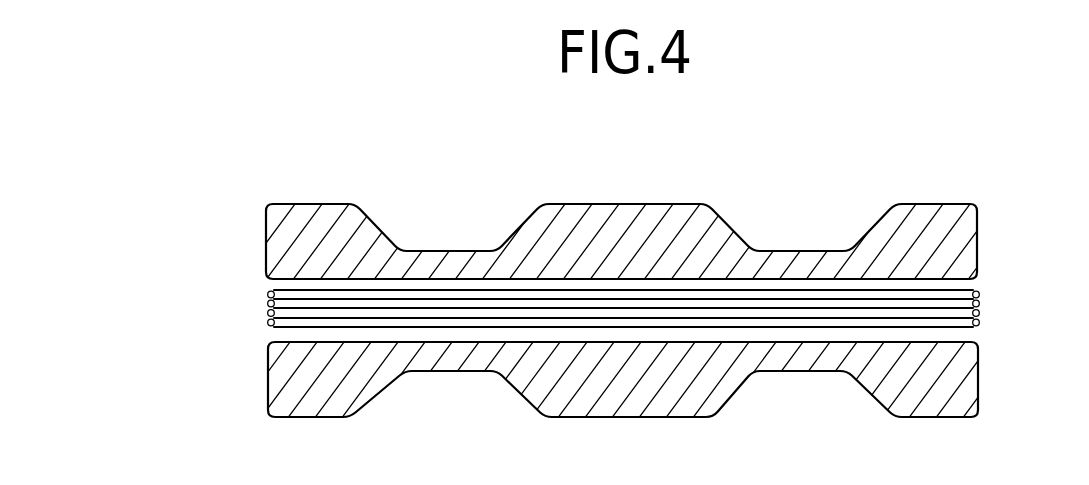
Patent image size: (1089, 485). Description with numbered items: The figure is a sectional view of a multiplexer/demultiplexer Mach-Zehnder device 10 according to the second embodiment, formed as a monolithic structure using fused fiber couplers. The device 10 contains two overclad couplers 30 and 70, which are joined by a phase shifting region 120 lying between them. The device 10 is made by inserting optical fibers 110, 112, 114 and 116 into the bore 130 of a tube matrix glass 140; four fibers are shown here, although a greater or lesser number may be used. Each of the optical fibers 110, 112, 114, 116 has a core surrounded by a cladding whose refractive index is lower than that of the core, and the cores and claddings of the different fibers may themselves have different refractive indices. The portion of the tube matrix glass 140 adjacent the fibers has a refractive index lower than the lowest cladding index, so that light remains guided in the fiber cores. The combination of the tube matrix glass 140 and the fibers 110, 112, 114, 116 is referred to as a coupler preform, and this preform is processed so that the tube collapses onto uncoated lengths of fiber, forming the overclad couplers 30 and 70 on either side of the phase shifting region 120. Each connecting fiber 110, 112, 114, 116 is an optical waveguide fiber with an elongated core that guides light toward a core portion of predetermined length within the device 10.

The multiplexer/demultiplexer Mach-Zehnder device 10 is at (712, 154).
The overclad coupler 30 is at (430, 251).
The overclad coupler 70 is at (790, 250).
The phase shifting region 120 is at (593, 204).
The tube matrix glass 140 is at (267, 402).
The optical fiber 110 is at (268, 294).
The optical fiber 112 is at (268, 304).
The optical fiber 114 is at (268, 314).
The optical fiber 116 is at (268, 324).
The bore 130 is at (962, 332).